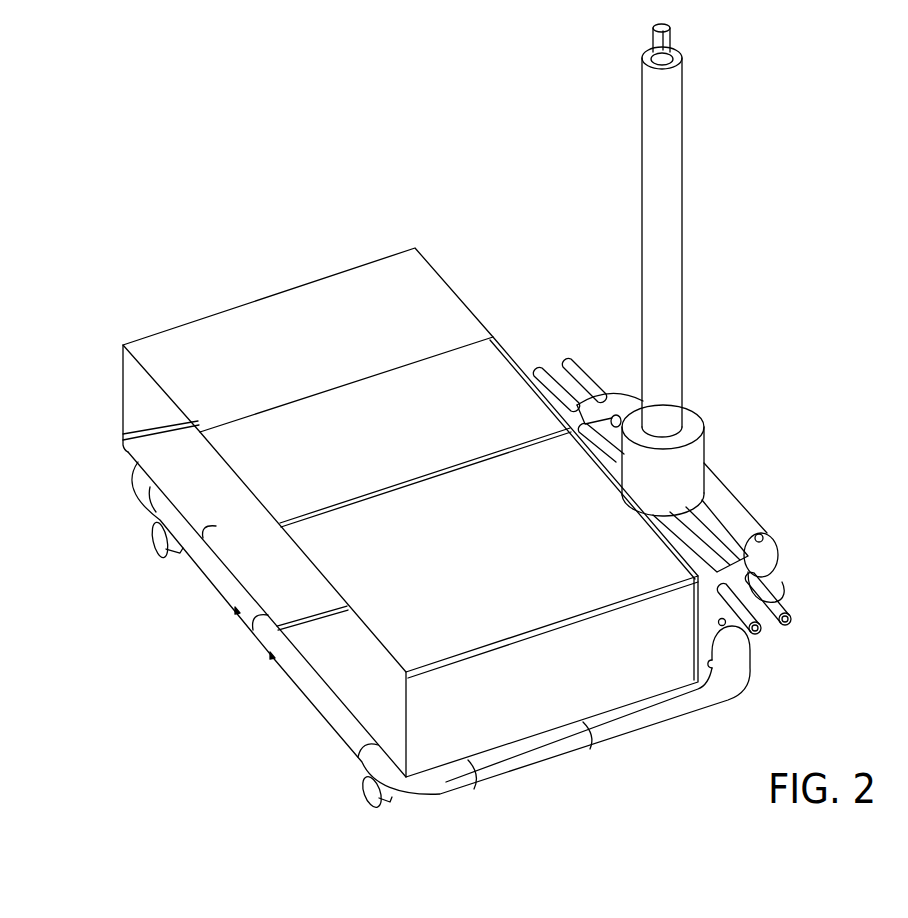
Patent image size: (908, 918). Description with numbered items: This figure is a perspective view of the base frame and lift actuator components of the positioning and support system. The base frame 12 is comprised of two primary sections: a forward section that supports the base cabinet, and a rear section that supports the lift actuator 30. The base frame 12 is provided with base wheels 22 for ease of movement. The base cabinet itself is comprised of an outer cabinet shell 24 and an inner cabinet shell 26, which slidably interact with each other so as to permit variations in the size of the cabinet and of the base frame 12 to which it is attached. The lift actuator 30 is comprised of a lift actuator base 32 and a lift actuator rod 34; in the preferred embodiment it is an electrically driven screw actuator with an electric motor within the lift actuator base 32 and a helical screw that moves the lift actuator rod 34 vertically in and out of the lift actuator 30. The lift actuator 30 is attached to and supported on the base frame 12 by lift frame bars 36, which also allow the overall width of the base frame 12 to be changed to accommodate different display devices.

The base frame 12 is at (741, 696).
The base wheels 22 is at (162, 546).
The outer cabinet shell 24 is at (482, 569).
The inner cabinet shell 26 is at (274, 357).
The lift actuator 30 is at (676, 336).
The lift actuator base 32 is at (688, 438).
The lift actuator rod 34 is at (670, 33).
The lift frame bars 36 is at (766, 641).